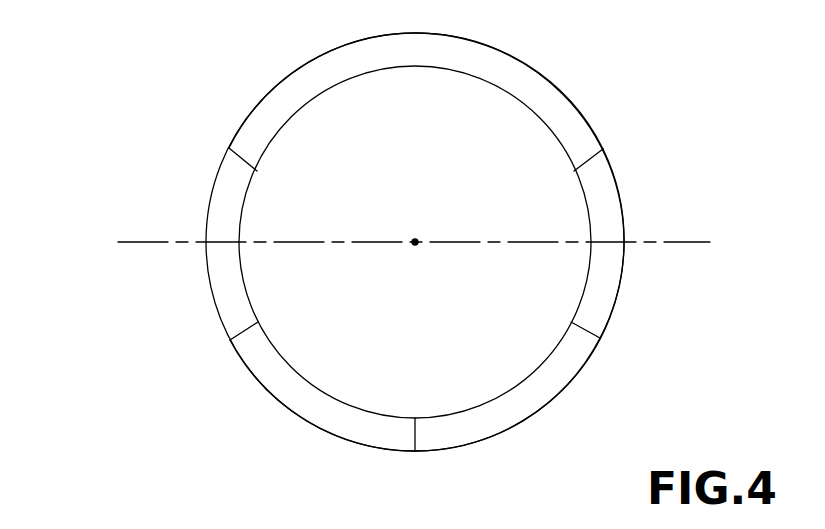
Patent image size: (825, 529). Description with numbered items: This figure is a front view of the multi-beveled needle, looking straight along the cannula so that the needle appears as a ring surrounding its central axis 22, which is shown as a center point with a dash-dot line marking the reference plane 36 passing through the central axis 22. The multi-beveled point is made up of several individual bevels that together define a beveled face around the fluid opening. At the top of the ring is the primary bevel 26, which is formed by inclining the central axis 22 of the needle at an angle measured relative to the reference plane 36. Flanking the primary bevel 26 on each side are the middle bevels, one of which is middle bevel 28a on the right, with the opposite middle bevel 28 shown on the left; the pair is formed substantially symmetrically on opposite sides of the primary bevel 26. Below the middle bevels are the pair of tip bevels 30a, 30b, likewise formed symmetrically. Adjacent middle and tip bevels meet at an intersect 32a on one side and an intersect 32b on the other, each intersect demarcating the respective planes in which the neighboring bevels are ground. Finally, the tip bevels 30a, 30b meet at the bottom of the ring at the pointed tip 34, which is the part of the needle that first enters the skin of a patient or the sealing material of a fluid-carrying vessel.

The central axis 22 is at (418, 239).
The primary bevel 26 is at (568, 122).
The ring portion 28 is at (223, 282).
The middle bevel 28a is at (608, 283).
The tip bevel 30a is at (503, 418).
The tip bevel 30b is at (323, 412).
The intersect 32a is at (593, 332).
The intersect 32b is at (240, 333).
The pointed tip 34 is at (418, 437).
The reference plane 36 is at (688, 242).